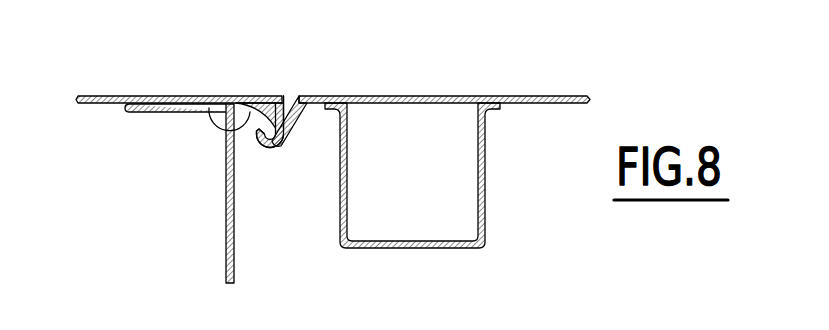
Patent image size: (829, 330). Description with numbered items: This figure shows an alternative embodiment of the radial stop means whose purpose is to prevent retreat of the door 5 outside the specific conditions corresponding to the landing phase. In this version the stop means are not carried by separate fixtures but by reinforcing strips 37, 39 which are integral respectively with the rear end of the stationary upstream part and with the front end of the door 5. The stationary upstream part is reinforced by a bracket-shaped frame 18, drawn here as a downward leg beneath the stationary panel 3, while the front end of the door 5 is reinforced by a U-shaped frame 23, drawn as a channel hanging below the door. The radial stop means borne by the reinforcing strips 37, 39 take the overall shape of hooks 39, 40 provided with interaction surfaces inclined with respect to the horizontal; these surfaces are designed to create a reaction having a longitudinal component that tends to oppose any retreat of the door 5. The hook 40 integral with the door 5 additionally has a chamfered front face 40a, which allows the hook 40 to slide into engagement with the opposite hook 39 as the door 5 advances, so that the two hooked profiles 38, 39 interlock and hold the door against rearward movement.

The first panel 3 is at (110, 95).
The door 5 is at (430, 94).
The bracket-shaped frame 18 is at (227, 213).
The U-shaped frame 23 is at (486, 162).
The reinforcing strip 37 is at (207, 95).
The hook 38 is at (273, 94).
The reinforcing strip / hook 39 is at (310, 94).
The hook 40 is at (284, 148).
The chamfered front face 40a is at (255, 128).